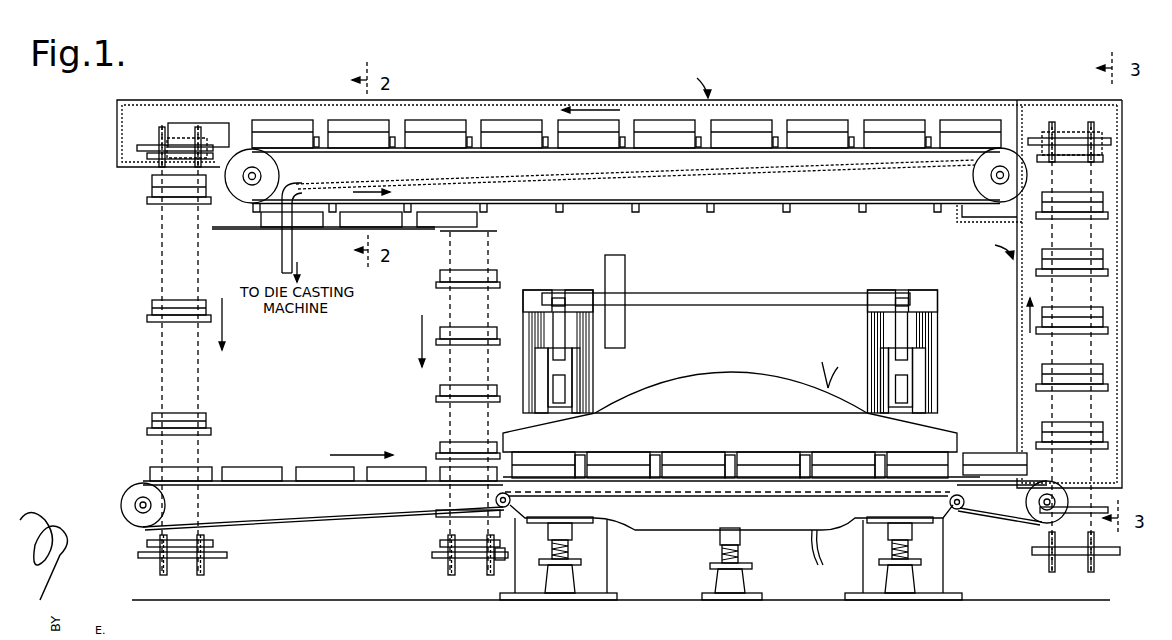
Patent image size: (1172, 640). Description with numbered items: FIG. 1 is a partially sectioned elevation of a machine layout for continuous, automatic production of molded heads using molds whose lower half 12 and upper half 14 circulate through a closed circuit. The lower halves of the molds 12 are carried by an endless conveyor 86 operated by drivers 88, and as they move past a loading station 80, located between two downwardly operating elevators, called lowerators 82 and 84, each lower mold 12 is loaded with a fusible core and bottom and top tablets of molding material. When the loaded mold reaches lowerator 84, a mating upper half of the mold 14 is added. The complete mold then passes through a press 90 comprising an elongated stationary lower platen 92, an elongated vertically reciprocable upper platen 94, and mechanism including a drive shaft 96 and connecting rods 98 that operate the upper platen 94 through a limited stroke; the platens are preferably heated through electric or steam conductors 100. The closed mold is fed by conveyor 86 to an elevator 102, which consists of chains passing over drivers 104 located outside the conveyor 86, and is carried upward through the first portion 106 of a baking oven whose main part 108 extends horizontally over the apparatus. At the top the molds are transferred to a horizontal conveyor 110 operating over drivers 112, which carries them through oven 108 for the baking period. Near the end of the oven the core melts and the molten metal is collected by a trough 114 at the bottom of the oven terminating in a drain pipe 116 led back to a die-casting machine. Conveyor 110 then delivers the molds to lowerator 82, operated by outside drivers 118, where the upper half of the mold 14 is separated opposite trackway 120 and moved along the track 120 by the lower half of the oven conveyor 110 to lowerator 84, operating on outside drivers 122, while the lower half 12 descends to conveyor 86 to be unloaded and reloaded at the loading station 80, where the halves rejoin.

The lower half of the mold 12 is at (150, 199).
The upper half of the mold 14 is at (150, 181).
The loading station 80 is at (292, 528).
The lowerator 82 is at (180, 577).
The lowerator 84 is at (470, 575).
The endless conveyor 86 is at (392, 488).
The drivers 88 is at (130, 516).
The press 90 is at (761, 427).
The lower platen 92 is at (660, 520).
The upper platen 94 is at (710, 385).
The drive shaft 96 is at (705, 295).
The connecting rods 98 is at (562, 360).
The electric or steam conductors 100 is at (800, 560).
The elevator 102 is at (1095, 473).
The drivers 104 is at (1090, 124).
The first portion of the baking oven 106 is at (1123, 265).
The main part of the baking oven 108 is at (745, 100).
The horizontal conveyor 110 is at (795, 150).
The drivers 112 is at (246, 190).
The trough 114 is at (455, 176).
The drain pipe 116 is at (292, 243).
The drivers 118 is at (160, 127).
The trackway 120 is at (270, 229).
The drivers 122 is at (446, 563).